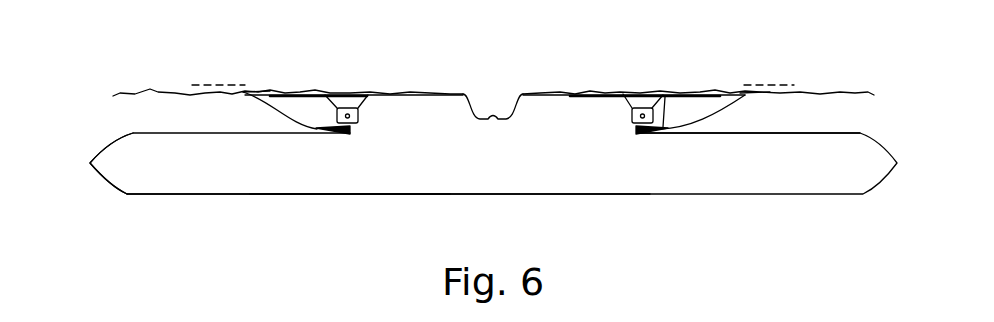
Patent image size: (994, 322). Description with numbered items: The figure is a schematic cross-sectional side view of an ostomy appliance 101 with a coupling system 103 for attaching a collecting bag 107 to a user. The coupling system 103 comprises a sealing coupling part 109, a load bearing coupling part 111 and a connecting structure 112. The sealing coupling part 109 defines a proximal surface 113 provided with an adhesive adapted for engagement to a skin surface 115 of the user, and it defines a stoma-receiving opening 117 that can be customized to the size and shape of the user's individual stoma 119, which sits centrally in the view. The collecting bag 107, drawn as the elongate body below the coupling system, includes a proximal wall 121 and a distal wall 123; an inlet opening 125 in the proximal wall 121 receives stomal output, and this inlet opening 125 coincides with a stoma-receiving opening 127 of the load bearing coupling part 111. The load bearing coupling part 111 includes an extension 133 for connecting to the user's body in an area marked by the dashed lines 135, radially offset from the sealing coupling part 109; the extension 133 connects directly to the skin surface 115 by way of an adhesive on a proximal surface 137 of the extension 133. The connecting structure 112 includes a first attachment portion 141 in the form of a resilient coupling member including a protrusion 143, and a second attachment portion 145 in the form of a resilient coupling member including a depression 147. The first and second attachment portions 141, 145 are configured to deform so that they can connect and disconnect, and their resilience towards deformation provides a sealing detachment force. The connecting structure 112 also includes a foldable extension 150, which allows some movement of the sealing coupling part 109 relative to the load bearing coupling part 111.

The ostomy appliance 101 is at (726, 209).
The coupling system 103 is at (740, 118).
The collecting bag 107 is at (187, 208).
The sealing coupling part 109 is at (323, 95).
The load bearing coupling part 111 is at (263, 112).
The connecting structure 112 is at (358, 124).
The proximal surface 113 is at (285, 93).
The skin surface 115 is at (113, 96).
The stoma-receiving opening 117 is at (440, 96).
The stoma 119 is at (492, 119).
The proximal wall 121 is at (129, 133).
The distal wall 123 is at (298, 197).
The inlet opening 125 is at (720, 163).
The stoma-receiving opening 127 is at (619, 135).
The extension 133 is at (257, 94).
The dashed lines 135 is at (197, 85).
The proximal surface 137 is at (756, 92).
The first attachment portion 141 is at (620, 74).
The protrusion 143 is at (642, 108).
The second attachment portion 145 is at (567, 84).
The depression 147 is at (630, 117).
The foldable extension 150 is at (668, 94).